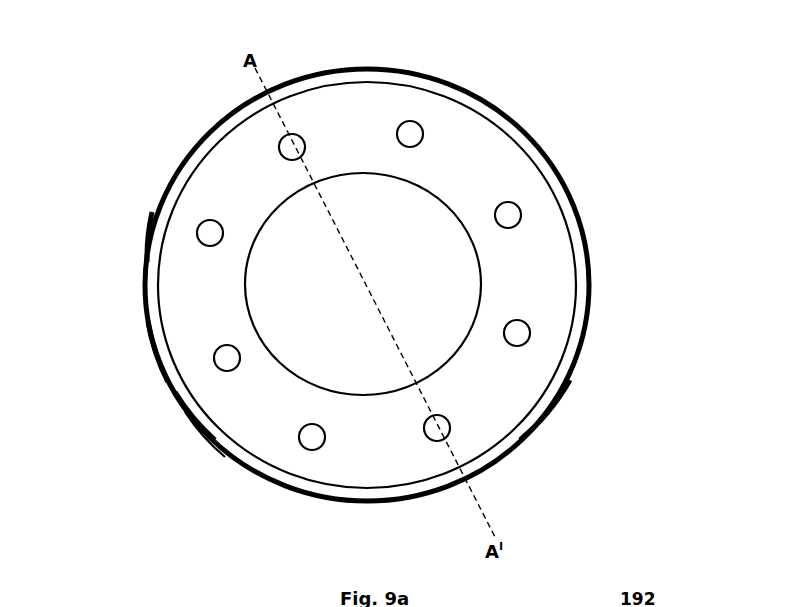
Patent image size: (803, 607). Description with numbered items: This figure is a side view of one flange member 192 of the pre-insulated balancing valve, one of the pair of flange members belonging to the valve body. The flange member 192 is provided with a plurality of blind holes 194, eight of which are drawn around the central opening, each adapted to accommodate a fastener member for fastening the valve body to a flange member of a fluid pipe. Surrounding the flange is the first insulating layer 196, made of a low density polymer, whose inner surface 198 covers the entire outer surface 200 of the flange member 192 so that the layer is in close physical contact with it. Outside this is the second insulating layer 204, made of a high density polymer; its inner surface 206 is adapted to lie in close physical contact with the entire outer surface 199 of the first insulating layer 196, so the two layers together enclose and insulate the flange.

The flange member 192 is at (524, 37).
The blind holes 194 is at (524, 325).
The first insulating layer 196 is at (158, 240).
The inner surface 198 is at (217, 142).
The outer surface 199 is at (197, 418).
The outer surface 200 is at (545, 408).
The second insulating layer 204 is at (158, 360).
The inner surface 206 is at (200, 428).